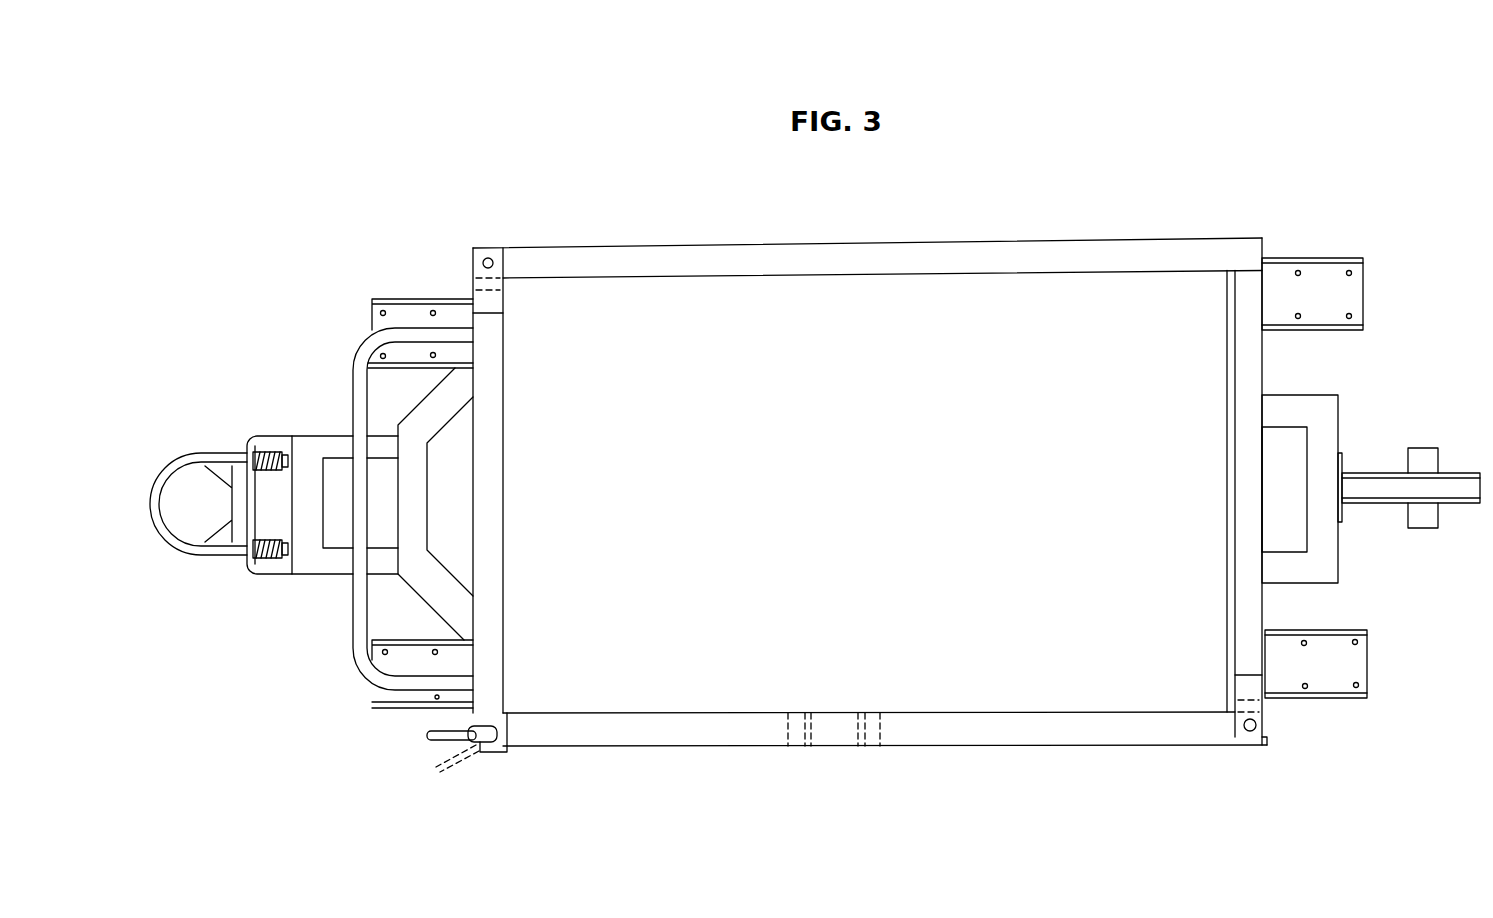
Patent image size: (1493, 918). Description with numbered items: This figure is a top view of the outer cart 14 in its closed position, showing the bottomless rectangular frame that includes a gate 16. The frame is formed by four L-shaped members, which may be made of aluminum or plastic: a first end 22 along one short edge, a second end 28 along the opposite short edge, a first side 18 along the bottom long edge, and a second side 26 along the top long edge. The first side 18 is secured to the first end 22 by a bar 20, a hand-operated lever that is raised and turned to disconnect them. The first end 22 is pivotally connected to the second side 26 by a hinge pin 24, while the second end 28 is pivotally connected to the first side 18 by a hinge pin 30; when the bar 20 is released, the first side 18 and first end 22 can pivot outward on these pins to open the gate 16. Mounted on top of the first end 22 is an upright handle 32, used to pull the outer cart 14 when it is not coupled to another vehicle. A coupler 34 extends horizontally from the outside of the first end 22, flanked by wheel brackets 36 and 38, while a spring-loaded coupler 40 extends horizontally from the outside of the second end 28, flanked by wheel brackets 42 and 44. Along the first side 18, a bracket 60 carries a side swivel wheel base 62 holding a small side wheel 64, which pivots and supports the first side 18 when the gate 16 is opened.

The outer cart 14 is at (1236, 184).
The gate 16 is at (368, 790).
The first side 18 is at (885, 759).
The bar 20 is at (440, 741).
The first end 22 is at (530, 453).
The hinge pin 24 is at (490, 257).
The second side 26 is at (803, 245).
The second end 28 is at (1294, 492).
The hinge pin 30 is at (1257, 726).
The upright handle 32 is at (353, 385).
The coupler 34 is at (193, 455).
The wheel bracket 36 is at (418, 640).
The wheel bracket 38 is at (372, 320).
The spring-loaded coupler 40 is at (1455, 472).
The wheel bracket 42 is at (1330, 272).
The wheel bracket 44 is at (1367, 655).
The bracket 60 is at (880, 748).
The side swivel wheel base 62 is at (862, 748).
The side wheel 64 is at (820, 746).